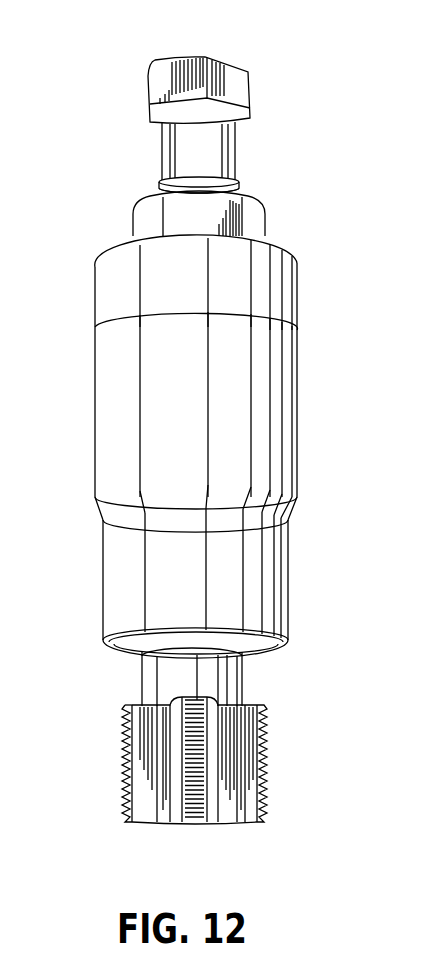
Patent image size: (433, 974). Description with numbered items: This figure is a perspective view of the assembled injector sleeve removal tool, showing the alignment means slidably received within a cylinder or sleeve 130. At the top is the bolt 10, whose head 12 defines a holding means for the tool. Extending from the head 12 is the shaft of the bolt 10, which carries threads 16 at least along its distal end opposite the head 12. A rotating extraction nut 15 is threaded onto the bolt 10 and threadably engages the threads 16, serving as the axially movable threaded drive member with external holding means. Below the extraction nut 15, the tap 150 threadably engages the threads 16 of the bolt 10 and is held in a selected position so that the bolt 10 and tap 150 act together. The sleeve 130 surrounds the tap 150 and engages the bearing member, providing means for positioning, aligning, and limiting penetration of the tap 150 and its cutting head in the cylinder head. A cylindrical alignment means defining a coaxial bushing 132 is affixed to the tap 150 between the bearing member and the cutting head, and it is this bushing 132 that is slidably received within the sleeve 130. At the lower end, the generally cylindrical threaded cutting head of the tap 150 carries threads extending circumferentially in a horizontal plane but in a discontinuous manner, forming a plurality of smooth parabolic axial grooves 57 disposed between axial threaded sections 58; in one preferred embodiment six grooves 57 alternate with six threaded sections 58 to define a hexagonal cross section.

The head 12 is at (232, 72).
The bolt 10 is at (222, 140).
The threads 16 is at (236, 187).
The rotating extraction nut 15 is at (258, 218).
The tap 150 is at (83, 421).
The sleeve 130 is at (253, 452).
The coaxial bushing 132 is at (248, 658).
The smooth parabolic axial grooves 57 is at (163, 773).
The axial threaded sections 58 is at (267, 770).